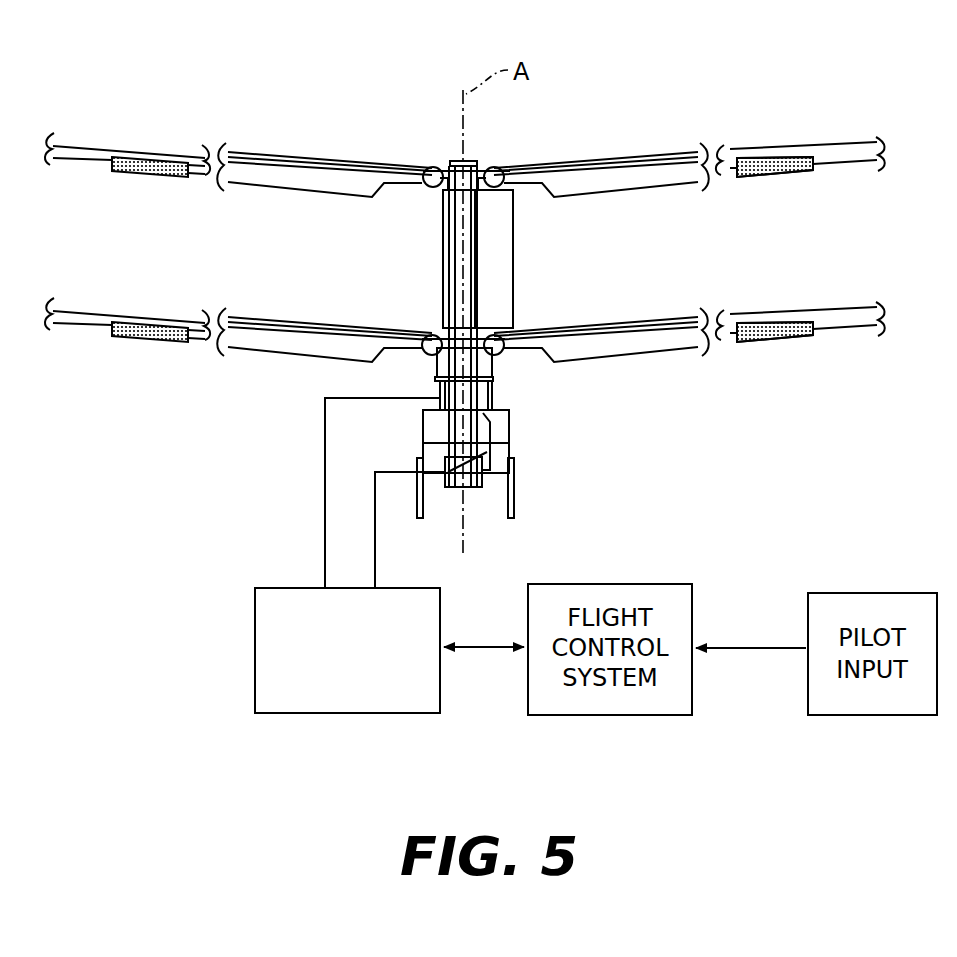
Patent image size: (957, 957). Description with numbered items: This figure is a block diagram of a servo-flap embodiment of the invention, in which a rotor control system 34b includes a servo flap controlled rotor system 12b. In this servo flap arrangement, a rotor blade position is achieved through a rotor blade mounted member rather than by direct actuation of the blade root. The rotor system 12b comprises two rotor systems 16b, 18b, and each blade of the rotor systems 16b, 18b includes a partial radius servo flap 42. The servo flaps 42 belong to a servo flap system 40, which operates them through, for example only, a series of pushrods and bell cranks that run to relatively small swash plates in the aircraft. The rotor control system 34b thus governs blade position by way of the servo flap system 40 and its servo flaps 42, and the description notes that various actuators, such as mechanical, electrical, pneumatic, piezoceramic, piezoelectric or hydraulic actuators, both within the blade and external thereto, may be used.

The servo flap controlled rotor system 12b is at (812, 110).
The rotor system 16b is at (538, 146).
The rotor system 18b is at (539, 290).
The partial radius servo flap 42 is at (775, 180).
The servo flap system 40 is at (518, 428).
The rotor control system 34b is at (430, 596).